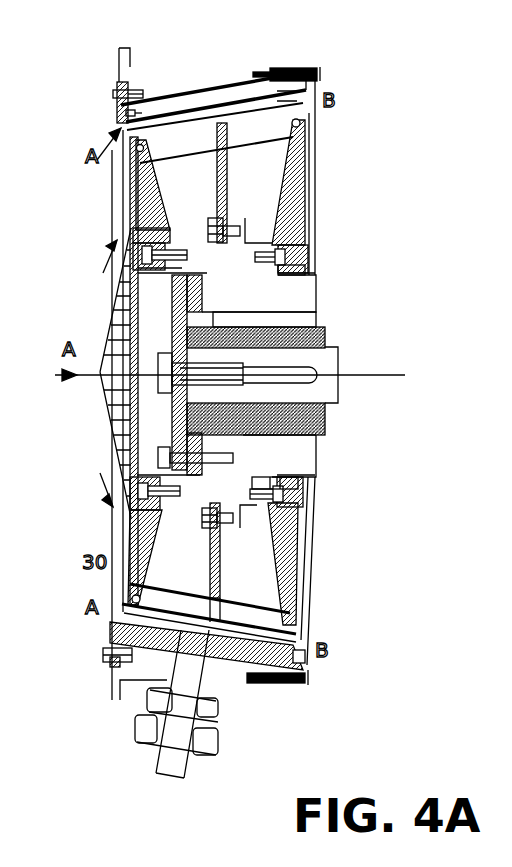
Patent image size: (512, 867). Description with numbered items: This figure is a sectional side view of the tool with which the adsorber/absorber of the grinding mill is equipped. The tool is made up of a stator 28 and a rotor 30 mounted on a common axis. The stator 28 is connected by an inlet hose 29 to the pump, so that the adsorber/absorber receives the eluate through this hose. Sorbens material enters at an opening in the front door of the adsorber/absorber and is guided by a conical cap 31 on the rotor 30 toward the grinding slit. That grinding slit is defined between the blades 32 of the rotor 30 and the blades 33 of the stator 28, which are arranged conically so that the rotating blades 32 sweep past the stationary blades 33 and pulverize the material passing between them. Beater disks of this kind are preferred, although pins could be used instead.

The stator 28 is at (192, 652).
The inlet hose 29 is at (221, 704).
The rotor 30 is at (248, 371).
The conical cap 31 is at (108, 373).
The blades 32 is at (215, 358).
The blades 33 is at (220, 94).